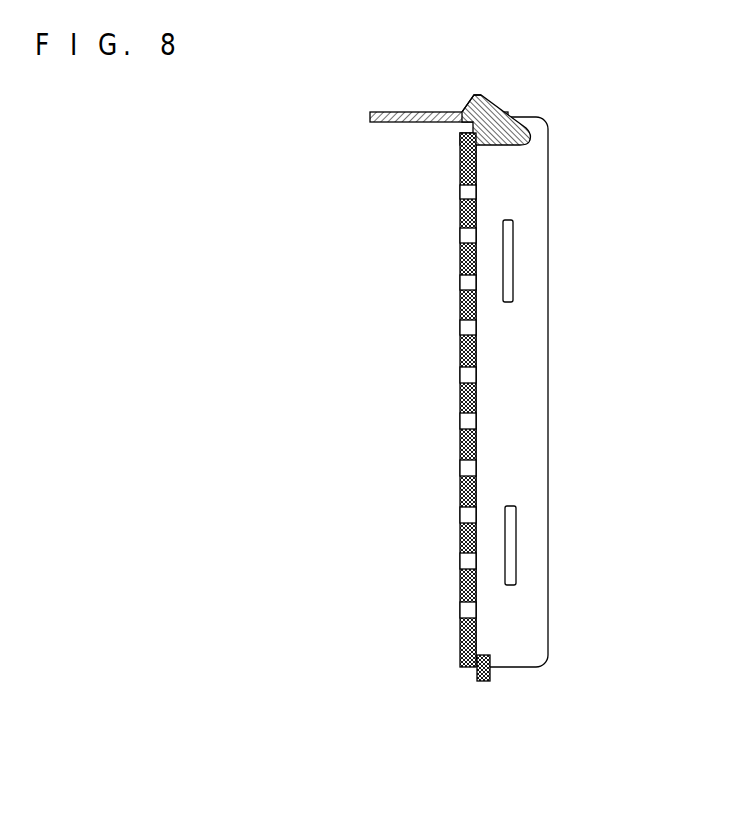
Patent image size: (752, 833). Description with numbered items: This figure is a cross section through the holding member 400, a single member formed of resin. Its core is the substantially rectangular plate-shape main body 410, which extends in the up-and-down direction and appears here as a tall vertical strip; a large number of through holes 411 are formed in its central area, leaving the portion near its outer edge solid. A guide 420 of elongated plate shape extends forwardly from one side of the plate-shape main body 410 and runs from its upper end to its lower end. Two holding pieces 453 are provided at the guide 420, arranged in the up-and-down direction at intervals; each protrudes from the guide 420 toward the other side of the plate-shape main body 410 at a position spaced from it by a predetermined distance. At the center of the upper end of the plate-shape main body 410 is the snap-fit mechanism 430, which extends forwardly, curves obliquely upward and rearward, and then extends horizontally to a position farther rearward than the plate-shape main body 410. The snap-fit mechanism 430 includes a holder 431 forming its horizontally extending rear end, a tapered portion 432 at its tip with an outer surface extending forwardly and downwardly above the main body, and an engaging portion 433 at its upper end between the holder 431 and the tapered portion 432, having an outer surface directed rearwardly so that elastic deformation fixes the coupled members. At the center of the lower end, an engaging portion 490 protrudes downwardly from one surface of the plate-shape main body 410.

The holding member 400 is at (718, 56).
The plate-shape main body 410 is at (462, 632).
The through holes 411 is at (463, 190).
The guide 420 is at (542, 600).
The snap-fit mechanism 430 is at (479, 97).
The holder 431 is at (407, 119).
The tapered portion 432 is at (504, 107).
The engaging portion 433 is at (472, 104).
The holding pieces 453 is at (507, 253).
The engaging portion 490 is at (492, 673).